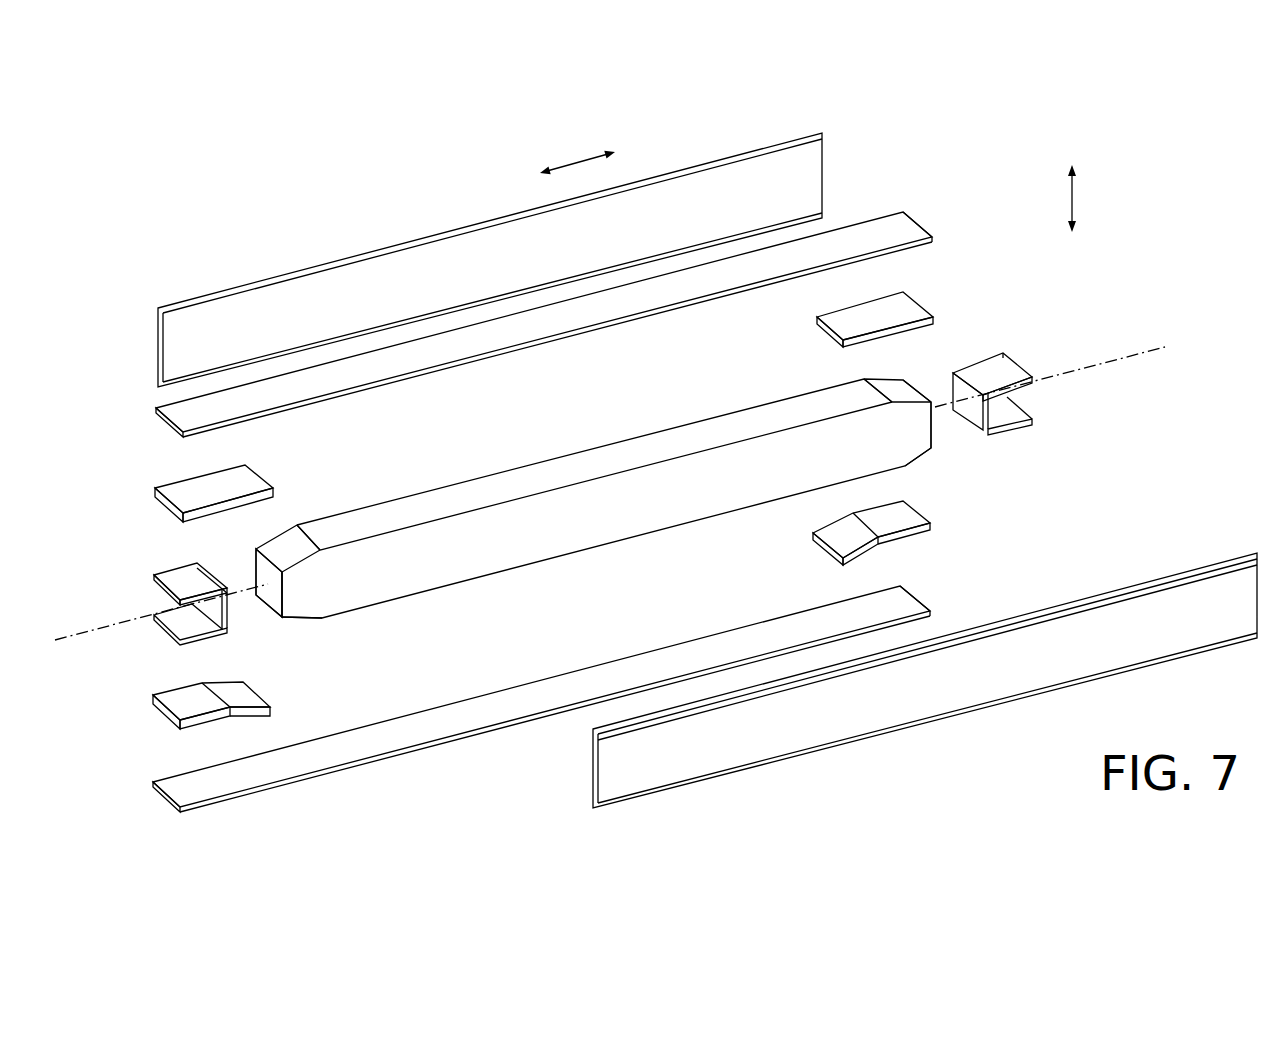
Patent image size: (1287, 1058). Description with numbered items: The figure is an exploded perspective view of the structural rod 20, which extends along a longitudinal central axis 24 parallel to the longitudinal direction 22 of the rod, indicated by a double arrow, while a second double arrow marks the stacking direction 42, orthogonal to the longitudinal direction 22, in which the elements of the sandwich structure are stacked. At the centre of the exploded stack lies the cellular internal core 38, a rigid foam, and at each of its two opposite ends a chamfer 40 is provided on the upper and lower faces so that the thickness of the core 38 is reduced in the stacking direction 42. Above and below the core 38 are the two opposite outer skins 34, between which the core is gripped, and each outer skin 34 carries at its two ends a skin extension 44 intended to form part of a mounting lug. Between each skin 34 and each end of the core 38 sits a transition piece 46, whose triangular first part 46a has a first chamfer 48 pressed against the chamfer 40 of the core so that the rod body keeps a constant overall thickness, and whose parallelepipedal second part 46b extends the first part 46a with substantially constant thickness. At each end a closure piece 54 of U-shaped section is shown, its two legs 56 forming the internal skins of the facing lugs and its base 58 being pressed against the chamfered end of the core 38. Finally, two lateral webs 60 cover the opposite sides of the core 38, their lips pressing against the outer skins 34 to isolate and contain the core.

The structural rod 20 is at (160, 229).
The longitudinal direction 22 is at (578, 162).
The longitudinal central axis 24 is at (62, 645).
The outer skin 34 is at (430, 348).
The cellular internal core 38 is at (520, 545).
The chamfer 40 is at (300, 540).
The stacking direction 42 is at (1080, 203).
The skin extension 44 is at (172, 412).
The transition piece 46 is at (868, 304).
The first part of the transition piece 46a is at (258, 470).
The second part of the transition piece 46b is at (165, 494).
The first chamfer 48 is at (252, 694).
The closure piece 54 is at (143, 580).
The leg of the U 56 is at (178, 587).
The base of the U 58 is at (237, 602).
The lateral web 60 is at (280, 312).